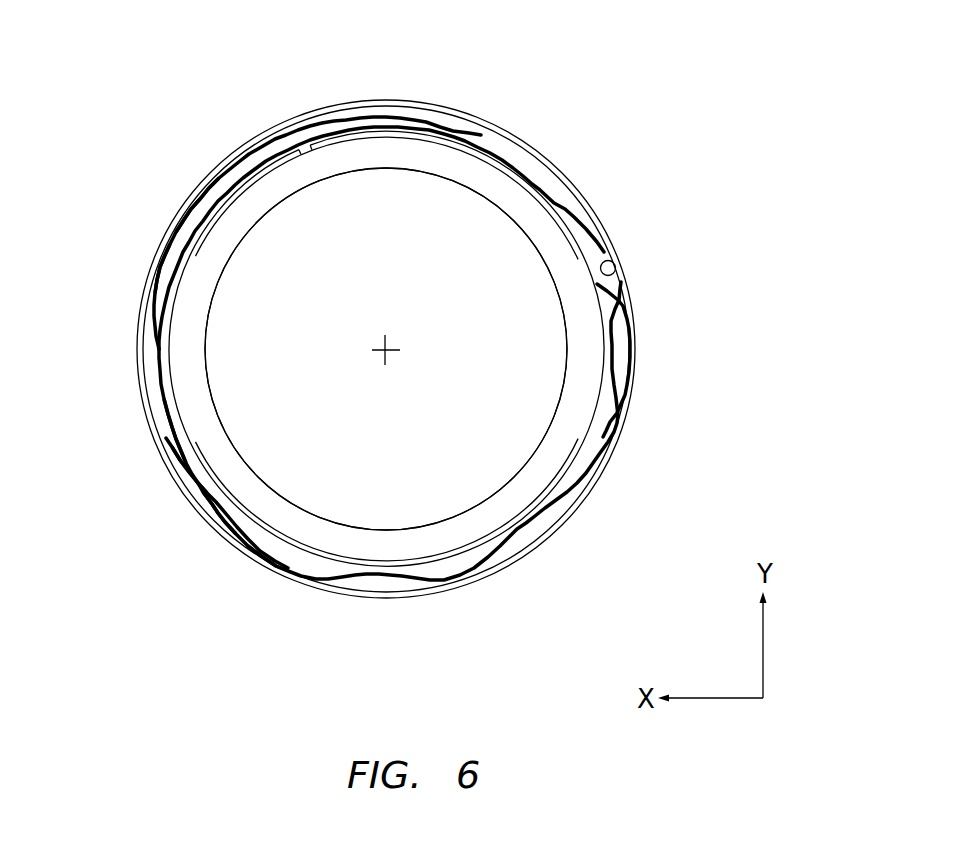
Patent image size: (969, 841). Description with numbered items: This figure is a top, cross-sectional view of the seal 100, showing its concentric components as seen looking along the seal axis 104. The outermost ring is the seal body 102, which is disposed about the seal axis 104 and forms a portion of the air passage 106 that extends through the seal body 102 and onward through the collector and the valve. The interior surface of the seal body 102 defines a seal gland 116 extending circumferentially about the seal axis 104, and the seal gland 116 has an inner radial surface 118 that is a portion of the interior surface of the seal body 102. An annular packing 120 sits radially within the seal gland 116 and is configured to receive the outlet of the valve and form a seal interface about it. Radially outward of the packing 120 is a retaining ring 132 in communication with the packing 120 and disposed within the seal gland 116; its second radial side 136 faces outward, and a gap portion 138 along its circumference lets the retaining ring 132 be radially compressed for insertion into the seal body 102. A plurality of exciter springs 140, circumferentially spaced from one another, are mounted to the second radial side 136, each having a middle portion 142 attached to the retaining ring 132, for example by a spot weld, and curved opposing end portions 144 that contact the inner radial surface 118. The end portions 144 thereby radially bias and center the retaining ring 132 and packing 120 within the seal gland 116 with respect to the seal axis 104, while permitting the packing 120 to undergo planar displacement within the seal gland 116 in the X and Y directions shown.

The seal 100 is at (566, 90).
The seal body 102 is at (565, 172).
The seal axis 104 is at (385, 350).
The air passage 106 is at (489, 462).
The seal gland 116 is at (632, 352).
The inner radial surface 118 is at (622, 277).
The annular packing 120 is at (453, 167).
The retaining ring 132 is at (167, 258).
The second radial side 136 is at (190, 228).
The gap portion 138 is at (302, 140).
The exciter springs 140 is at (170, 495).
The middle portion 142 is at (220, 510).
The end portions 144 is at (153, 463).